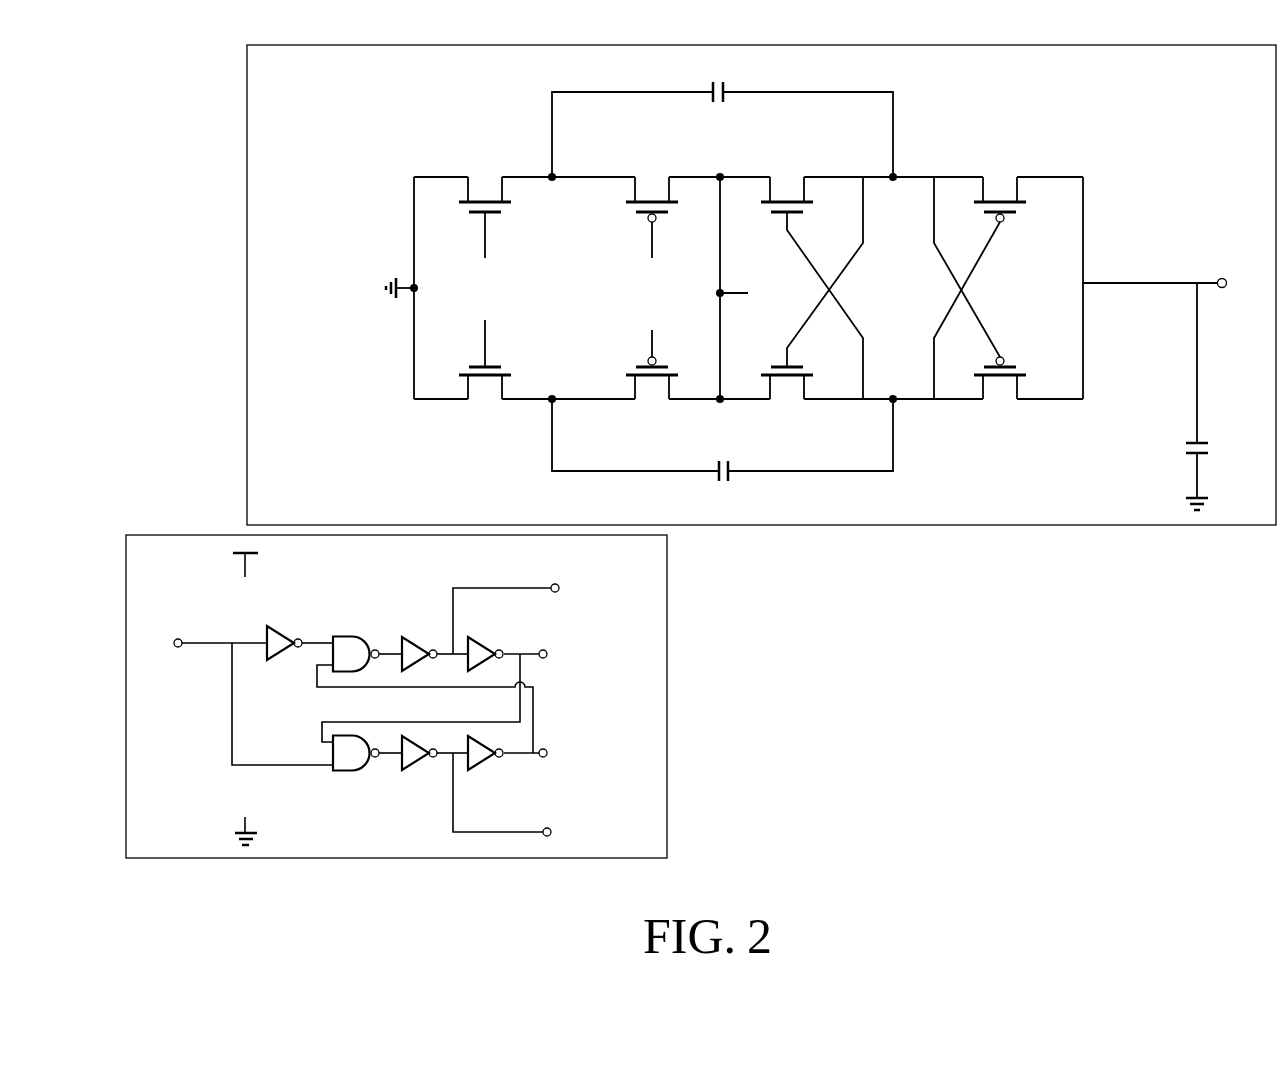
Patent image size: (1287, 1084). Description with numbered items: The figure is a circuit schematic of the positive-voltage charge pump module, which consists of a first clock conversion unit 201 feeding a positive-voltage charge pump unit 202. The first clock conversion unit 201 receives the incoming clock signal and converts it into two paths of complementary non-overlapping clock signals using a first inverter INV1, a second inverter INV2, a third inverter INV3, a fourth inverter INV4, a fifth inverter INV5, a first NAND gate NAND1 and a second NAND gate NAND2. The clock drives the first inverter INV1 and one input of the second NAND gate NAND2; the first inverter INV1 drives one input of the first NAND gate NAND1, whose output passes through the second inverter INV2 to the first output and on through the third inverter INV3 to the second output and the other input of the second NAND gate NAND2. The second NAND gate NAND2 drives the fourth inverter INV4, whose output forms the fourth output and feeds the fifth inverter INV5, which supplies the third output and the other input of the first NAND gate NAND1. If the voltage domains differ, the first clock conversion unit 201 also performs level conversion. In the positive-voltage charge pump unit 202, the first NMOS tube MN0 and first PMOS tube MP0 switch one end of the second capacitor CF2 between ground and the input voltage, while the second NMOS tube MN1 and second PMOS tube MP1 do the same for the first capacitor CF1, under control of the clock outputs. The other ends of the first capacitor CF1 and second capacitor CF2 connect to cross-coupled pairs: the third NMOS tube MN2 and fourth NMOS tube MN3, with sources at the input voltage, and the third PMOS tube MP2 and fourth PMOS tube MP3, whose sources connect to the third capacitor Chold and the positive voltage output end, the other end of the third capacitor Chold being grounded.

The first clock conversion unit 201 is at (667, 712).
The positive-voltage charge pump unit 202 is at (247, 245).
The first NMOS tube MN0 is at (485, 201).
The second NMOS tube MN1 is at (485, 378).
The third NMOS tube MN2 is at (812, 307).
The fourth NMOS tube MN3 is at (812, 273).
The first PMOS tube MP0 is at (652, 202).
The second PMOS tube MP1 is at (652, 379).
The third PMOS tube MP2 is at (980, 307).
The fourth PMOS tube MP3 is at (980, 276).
The first capacitor CF1 is at (722, 453).
The second capacitor CF2 is at (722, 119).
The third capacitor Chold is at (1226, 396).
The first inverter INV1 is at (282, 632).
The second inverter INV2 is at (418, 645).
The third inverter INV3 is at (485, 646).
The fourth inverter INV4 is at (416, 762).
The fifth inverter INV5 is at (490, 762).
The first NAND gate NAND1 is at (354, 643).
The second NAND gate NAND2 is at (352, 765).